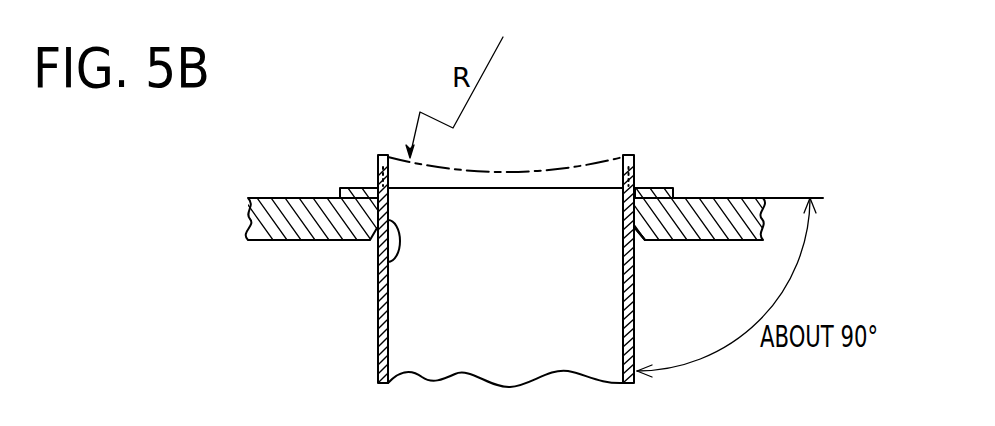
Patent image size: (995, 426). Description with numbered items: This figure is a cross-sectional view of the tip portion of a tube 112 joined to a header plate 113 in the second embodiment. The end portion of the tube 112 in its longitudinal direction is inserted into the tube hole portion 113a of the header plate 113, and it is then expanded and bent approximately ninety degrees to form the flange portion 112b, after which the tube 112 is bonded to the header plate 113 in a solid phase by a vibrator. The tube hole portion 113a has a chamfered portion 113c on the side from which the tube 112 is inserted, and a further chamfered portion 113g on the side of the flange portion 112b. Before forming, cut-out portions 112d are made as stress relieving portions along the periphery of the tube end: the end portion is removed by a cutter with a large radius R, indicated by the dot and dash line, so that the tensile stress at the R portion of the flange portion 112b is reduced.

The tube 112 is at (378, 347).
The flange portion 112b is at (342, 187).
The cut-out portion 112d is at (397, 152).
The header plate 113 is at (272, 212).
The tube hole portion 113a is at (378, 262).
The chamfered portion 113c is at (640, 242).
The chamfered portion 113g is at (637, 190).